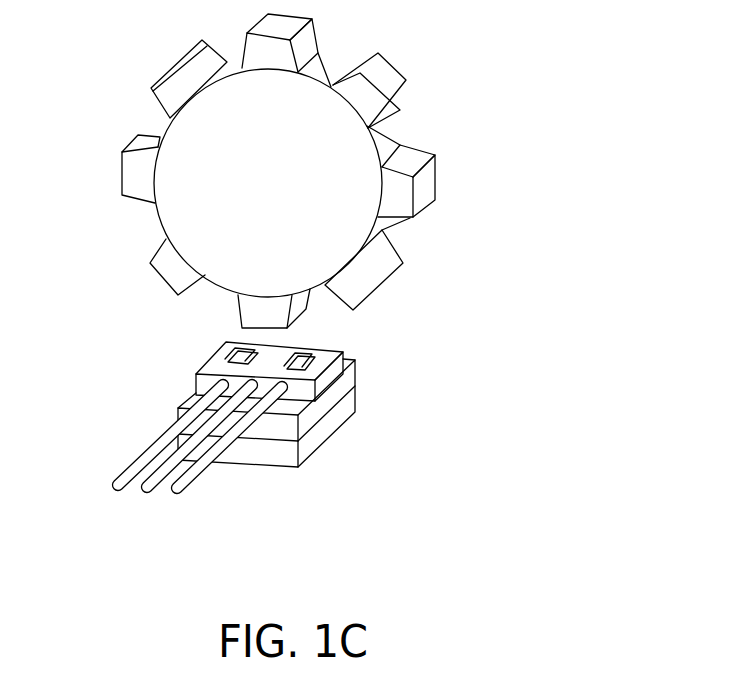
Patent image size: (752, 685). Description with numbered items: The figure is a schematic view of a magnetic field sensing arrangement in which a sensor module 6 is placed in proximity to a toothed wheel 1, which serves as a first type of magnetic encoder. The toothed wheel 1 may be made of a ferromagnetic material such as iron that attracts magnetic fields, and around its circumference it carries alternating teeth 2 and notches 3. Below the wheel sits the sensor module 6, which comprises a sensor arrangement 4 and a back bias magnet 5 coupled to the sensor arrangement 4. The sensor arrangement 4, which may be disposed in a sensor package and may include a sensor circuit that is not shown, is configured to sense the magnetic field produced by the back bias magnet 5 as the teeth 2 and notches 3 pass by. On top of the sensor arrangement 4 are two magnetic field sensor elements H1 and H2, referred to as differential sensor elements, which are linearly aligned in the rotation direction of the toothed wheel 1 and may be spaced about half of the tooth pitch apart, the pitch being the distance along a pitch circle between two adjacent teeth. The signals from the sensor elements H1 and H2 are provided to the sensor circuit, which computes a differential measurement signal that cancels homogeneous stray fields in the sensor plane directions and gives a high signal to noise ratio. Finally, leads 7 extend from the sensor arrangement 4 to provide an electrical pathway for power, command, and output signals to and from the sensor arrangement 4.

The toothed wheel 1 is at (177, 221).
The teeth 2 is at (392, 70).
The notches 3 is at (295, 168).
The sensor arrangement 4 is at (276, 350).
The back bias magnet 5 is at (345, 415).
The sensor module 6 is at (280, 418).
The leads 7 is at (180, 495).
The magnetic field sensor element H1 is at (230, 350).
The magnetic field sensor element H2 is at (305, 355).